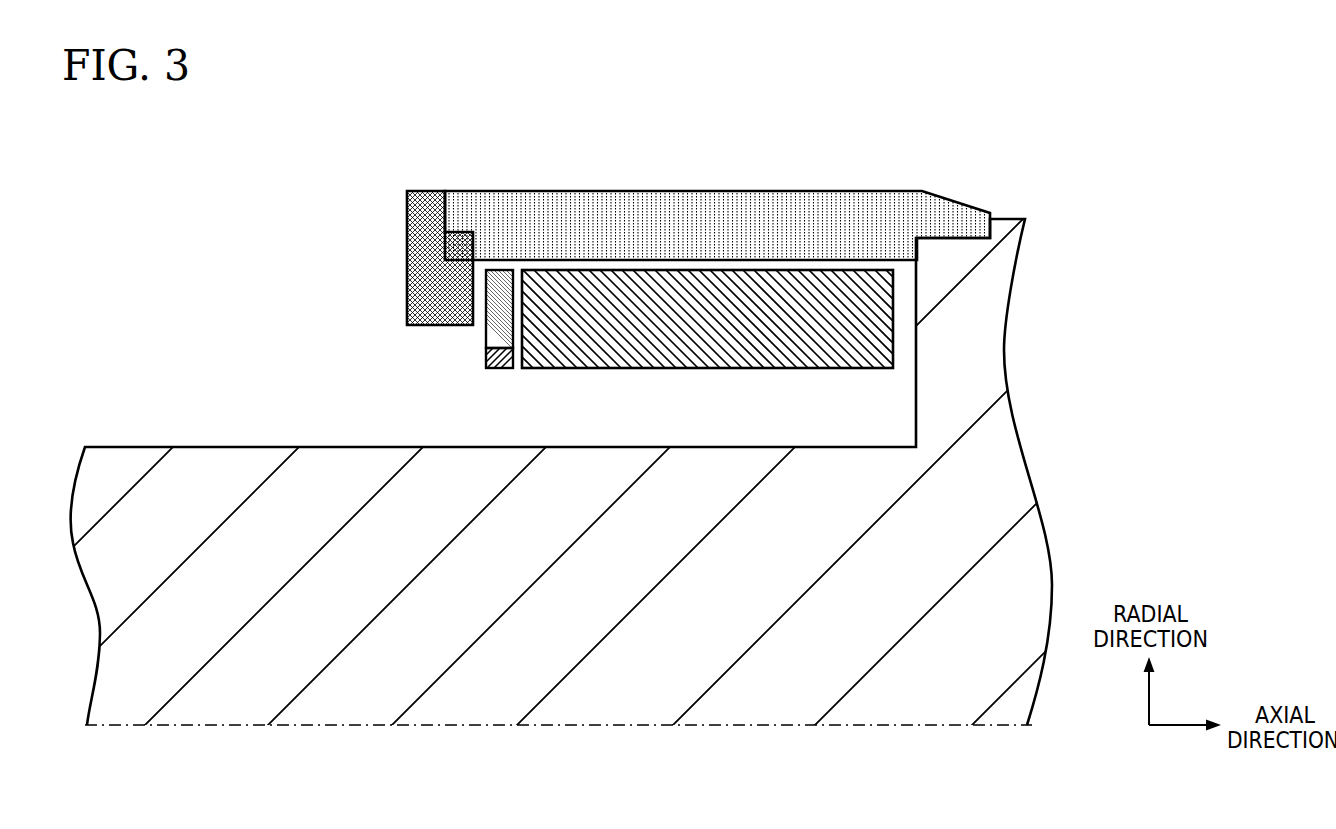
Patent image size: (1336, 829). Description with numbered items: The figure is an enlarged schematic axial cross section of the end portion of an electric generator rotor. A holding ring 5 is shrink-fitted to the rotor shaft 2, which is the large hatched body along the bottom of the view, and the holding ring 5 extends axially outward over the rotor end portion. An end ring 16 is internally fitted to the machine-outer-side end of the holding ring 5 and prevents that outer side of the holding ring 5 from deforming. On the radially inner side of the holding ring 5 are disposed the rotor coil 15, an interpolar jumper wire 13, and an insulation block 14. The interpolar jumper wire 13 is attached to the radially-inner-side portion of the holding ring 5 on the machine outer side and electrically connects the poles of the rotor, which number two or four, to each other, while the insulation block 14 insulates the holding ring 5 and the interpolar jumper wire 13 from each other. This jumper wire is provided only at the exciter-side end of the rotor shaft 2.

The rotor shaft 2 is at (965, 350).
The holding ring 5 is at (783, 237).
The interpolar jumper wire 13 is at (487, 370).
The insulation block 14 is at (485, 330).
The rotor coil 15 is at (706, 330).
The end ring 16 is at (405, 283).